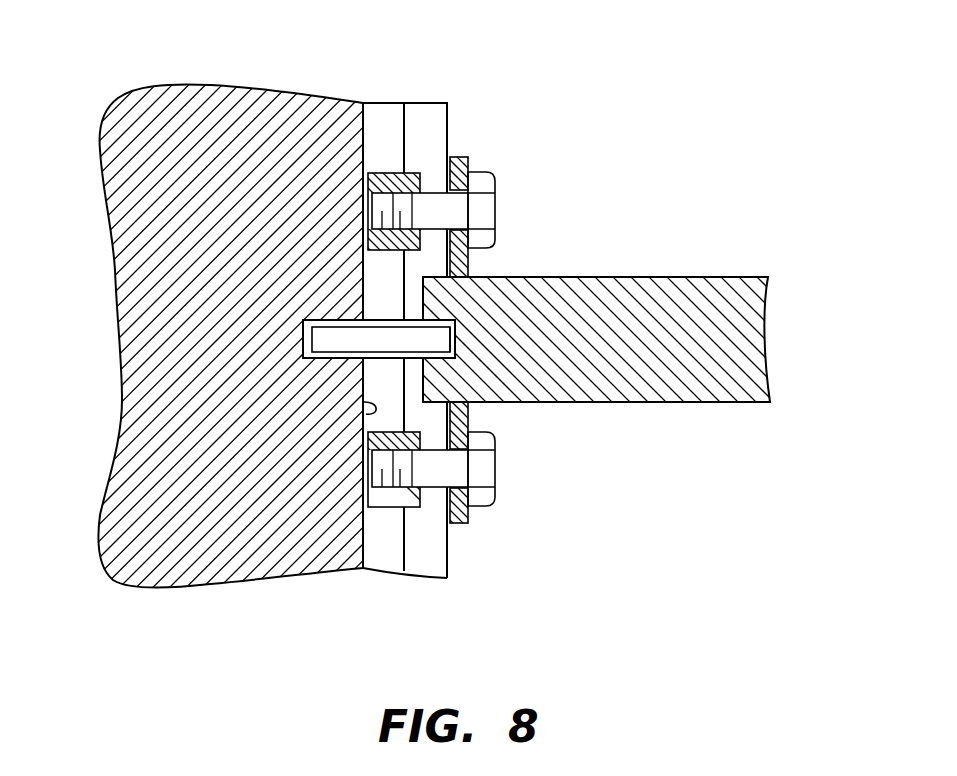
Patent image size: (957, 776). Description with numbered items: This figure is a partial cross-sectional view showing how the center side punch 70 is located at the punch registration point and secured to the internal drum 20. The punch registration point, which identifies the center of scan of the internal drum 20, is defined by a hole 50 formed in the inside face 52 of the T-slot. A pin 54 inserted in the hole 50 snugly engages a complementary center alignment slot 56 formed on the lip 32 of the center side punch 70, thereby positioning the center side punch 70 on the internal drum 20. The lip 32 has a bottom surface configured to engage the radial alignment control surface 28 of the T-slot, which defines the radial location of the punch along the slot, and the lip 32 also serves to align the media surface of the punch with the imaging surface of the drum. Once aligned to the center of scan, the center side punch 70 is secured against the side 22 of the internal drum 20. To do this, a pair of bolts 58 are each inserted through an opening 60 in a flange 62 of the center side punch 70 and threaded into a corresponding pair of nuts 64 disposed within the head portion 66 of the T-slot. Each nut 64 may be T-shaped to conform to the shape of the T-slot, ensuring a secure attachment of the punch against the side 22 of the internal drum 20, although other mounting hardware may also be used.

The internal drum 20 is at (167, 543).
The side 22 is at (447, 556).
The radial alignment control surface 28 is at (427, 120).
The lip 32 is at (423, 300).
The hole 50 is at (302, 338).
The inside face 52 is at (367, 408).
The pin 54 is at (330, 335).
The center alignment slot 56 is at (457, 340).
The bolt 58 is at (482, 212).
The opening 60 is at (467, 165).
The flange 62 is at (457, 157).
The nut 64 is at (390, 173).
The head portion 66 is at (377, 129).
The center side punch 70 is at (742, 333).